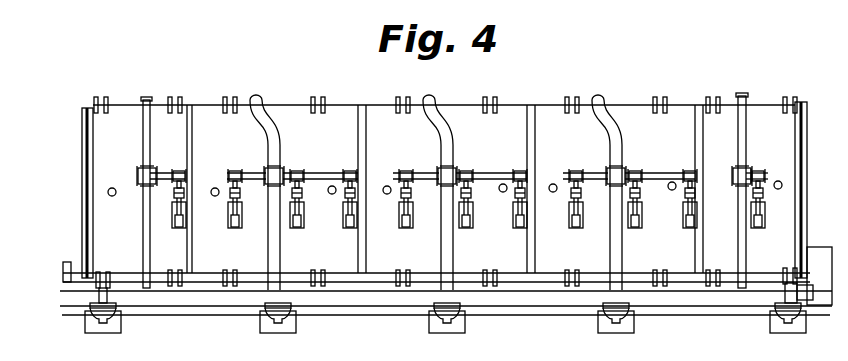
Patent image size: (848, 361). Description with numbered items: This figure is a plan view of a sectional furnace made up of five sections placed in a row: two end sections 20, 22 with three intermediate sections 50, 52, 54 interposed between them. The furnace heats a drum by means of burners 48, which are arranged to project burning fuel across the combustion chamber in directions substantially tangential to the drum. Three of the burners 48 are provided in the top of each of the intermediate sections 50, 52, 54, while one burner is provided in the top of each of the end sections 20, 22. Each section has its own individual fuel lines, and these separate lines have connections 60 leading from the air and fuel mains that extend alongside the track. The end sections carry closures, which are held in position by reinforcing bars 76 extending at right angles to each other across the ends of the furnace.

The end section 20 is at (146, 192).
The end section 22 is at (757, 190).
The burner 48 is at (342, 217).
The intermediate section 50 is at (464, 192).
The intermediate section 52 is at (296, 192).
The intermediate section 54 is at (633, 192).
The connection 60 is at (787, 325).
The reinforcing bar 76 is at (85, 186).